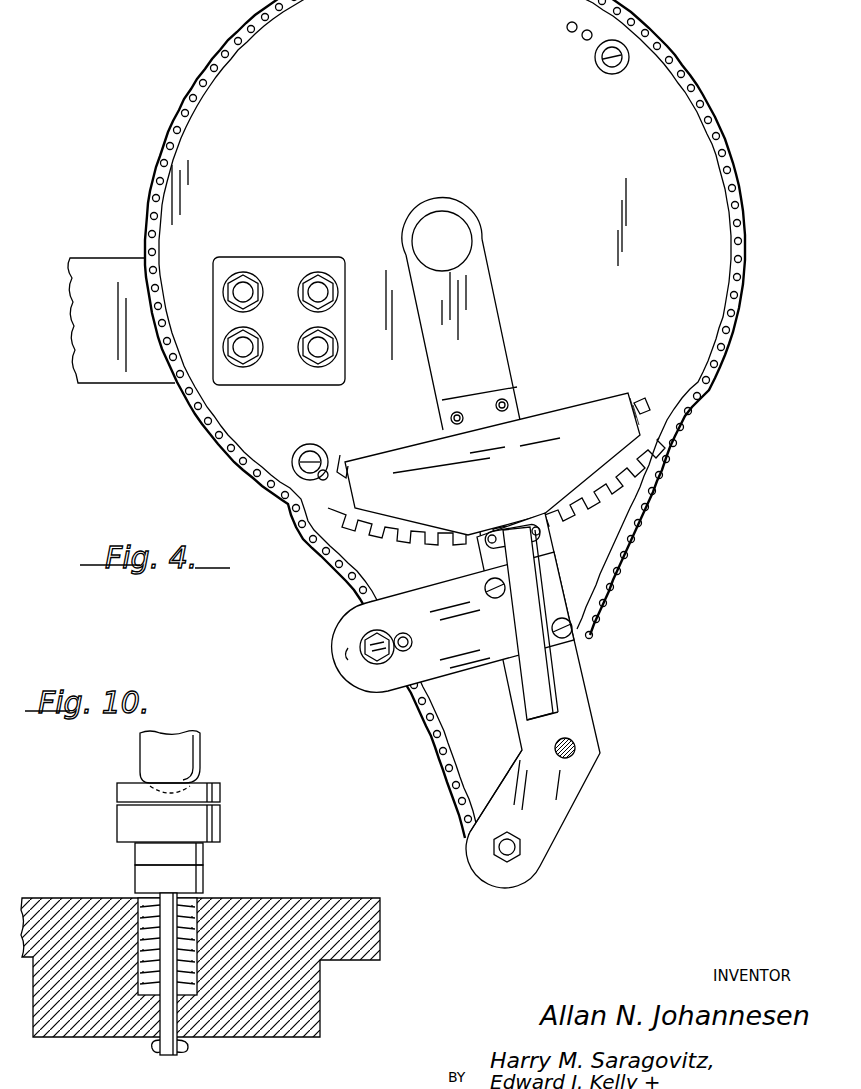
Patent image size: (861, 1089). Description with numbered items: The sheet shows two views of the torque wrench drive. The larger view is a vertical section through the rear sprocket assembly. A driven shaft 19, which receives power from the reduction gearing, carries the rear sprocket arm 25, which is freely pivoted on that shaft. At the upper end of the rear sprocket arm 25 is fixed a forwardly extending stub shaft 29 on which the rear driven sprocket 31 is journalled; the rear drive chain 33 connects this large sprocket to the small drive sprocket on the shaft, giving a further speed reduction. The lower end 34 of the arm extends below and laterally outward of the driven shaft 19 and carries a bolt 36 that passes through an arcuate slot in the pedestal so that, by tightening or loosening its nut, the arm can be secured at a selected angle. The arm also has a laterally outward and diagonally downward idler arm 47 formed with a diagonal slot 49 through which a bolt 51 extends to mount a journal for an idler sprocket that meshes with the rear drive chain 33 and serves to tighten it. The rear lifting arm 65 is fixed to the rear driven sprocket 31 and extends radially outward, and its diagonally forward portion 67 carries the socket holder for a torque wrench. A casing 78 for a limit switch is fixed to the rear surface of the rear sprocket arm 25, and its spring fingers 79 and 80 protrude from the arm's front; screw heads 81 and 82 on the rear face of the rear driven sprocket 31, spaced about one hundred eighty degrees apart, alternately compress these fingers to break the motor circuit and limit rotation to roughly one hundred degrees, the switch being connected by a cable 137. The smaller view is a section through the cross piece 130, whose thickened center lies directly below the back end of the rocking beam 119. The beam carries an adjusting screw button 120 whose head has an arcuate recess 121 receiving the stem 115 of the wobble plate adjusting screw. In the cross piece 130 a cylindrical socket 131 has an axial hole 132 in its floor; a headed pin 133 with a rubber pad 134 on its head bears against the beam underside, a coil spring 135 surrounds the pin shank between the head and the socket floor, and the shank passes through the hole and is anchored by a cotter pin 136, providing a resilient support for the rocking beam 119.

In FIG. 4, the driven shaft 19 is at (556, 700).
In FIG. 4, the rear sprocket arm 25 is at (466, 314).
In FIG. 4, the stub shaft 29 is at (462, 243).
In FIG. 4, the rear driven sprocket 31 is at (712, 329).
In FIG. 4, the rear drive chain 33 is at (672, 477).
In FIG. 4, the lower end of rear sprocket arm 34 is at (543, 837).
In FIG. 4, the bolt 36 is at (515, 858).
In FIG. 4, the idler arm 47 is at (438, 635).
In FIG. 4, the slot 49 is at (350, 657).
In FIG. 4, the bolt 51 is at (376, 665).
In FIG. 4, the rear lifting arm 65 is at (91, 264).
In FIG. 4, the forward portion of rear lifting arm 67 is at (287, 268).
In FIG. 4, the limit switch casing 78 is at (500, 456).
In FIG. 4, the spring finger 79 is at (645, 402).
In FIG. 4, the spring finger 80 is at (348, 457).
In FIG. 4, the screw head 81 is at (308, 447).
In FIG. 4, the screw head 82 is at (611, 75).
In FIG. 4, the cable 137 is at (555, 682).
In FIG. 10, the stem 115 is at (145, 757).
In FIG. 10, the rocking beam 119 is at (222, 820).
In FIG. 10, the adjusting screw button 120 is at (222, 792).
In FIG. 10, the circular arcuate recess 121 is at (205, 781).
In FIG. 10, the cross piece 130 is at (392, 934).
In FIG. 10, the cylindrical socket 131 is at (138, 900).
In FIG. 10, the hole 132 is at (158, 1049).
In FIG. 10, the headed pin 133 is at (215, 889).
In FIG. 10, the rubber pad 134 is at (205, 858).
In FIG. 10, the coil spring 135 is at (200, 935).
In FIG. 10, the cotter pin 136 is at (184, 1046).